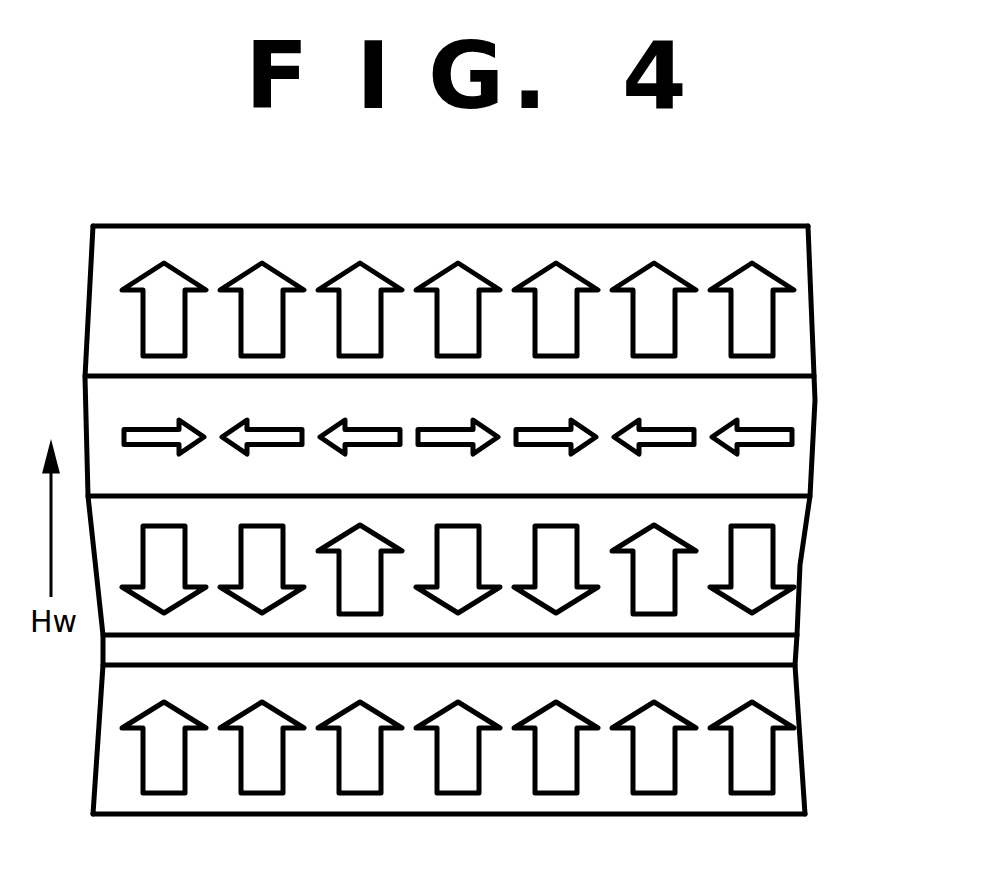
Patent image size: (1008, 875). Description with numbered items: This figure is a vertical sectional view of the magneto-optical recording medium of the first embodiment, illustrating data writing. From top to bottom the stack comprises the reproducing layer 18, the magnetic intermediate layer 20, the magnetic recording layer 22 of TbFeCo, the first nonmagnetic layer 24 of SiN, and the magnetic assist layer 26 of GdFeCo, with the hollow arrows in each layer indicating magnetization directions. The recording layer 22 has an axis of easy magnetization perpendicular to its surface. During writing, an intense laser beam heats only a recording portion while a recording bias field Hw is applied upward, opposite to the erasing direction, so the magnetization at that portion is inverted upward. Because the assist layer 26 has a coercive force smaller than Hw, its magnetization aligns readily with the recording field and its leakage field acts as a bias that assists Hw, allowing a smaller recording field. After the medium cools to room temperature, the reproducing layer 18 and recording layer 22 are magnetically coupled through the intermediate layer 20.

The reproducing layer 18 is at (793, 315).
The magnetic intermediate layer 20 is at (800, 435).
The magnetic recording layer 22 is at (785, 565).
The first nonmagnetic layer 24 is at (780, 652).
The magnetic assist layer 26 is at (782, 754).